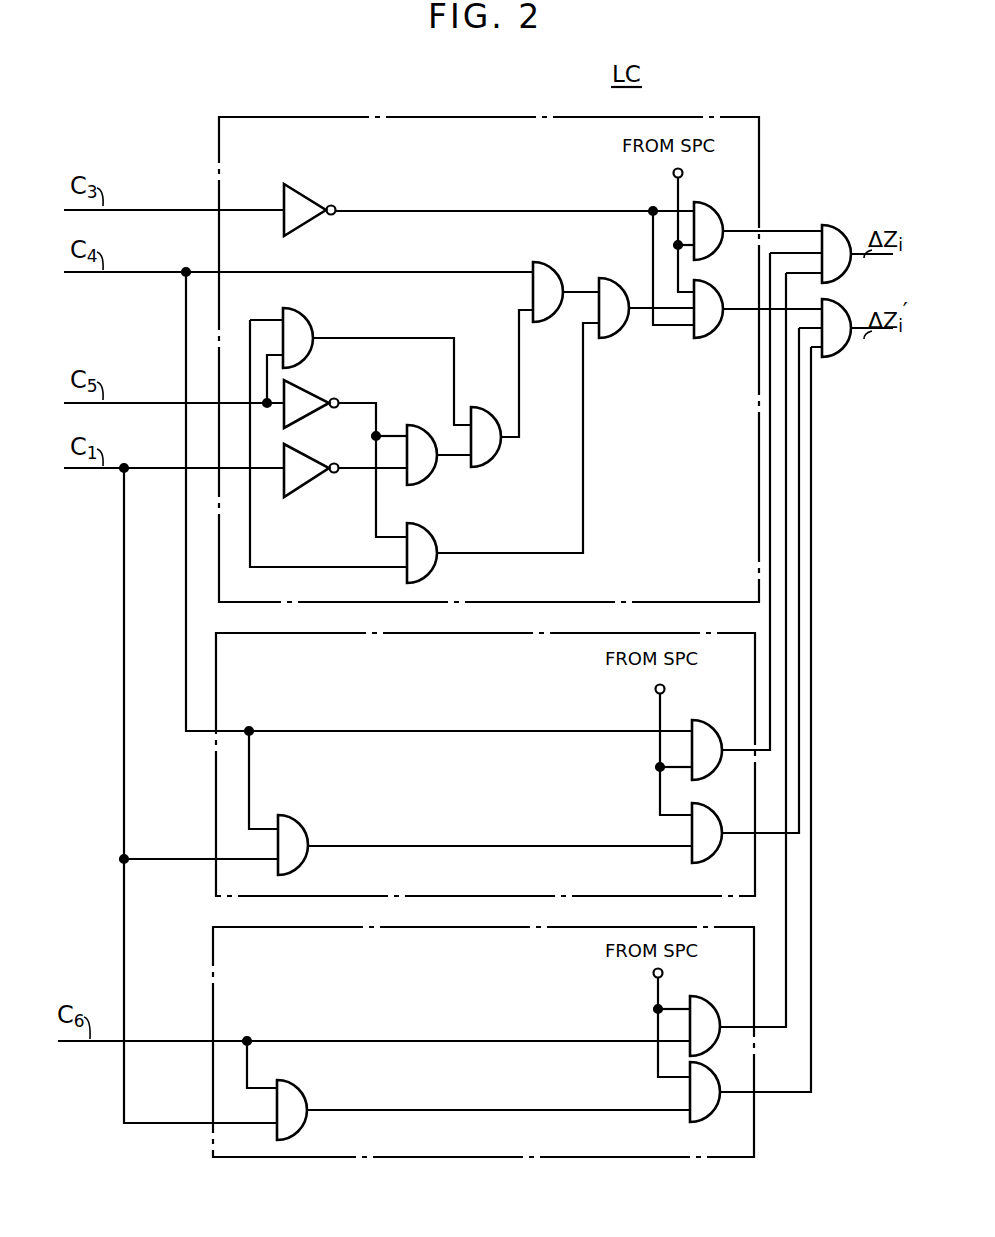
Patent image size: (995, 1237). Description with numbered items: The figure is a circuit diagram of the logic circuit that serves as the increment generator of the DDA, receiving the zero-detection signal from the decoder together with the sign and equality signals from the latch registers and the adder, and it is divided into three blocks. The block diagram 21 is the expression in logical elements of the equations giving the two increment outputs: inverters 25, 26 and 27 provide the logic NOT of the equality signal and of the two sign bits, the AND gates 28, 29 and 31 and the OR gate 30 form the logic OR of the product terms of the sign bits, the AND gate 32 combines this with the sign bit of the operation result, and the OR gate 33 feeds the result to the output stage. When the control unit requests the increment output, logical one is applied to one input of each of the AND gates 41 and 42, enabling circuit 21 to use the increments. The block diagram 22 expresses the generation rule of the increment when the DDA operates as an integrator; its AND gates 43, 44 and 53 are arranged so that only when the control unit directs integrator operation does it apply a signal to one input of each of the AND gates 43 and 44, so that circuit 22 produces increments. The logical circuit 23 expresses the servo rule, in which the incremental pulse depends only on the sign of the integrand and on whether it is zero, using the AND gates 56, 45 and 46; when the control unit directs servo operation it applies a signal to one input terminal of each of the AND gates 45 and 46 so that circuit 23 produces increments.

The block diagram 21 is at (514, 165).
The block diagram 22 is at (528, 675).
The logical circuit 23 is at (526, 980).
The inverter 25 is at (310, 199).
The inverter 26 is at (317, 396).
The inverter 27 is at (312, 488).
The AND gate 28 is at (311, 318).
The AND gate 29 is at (431, 473).
The OR gate 30 is at (500, 451).
The AND gate 31 is at (434, 564).
The AND gate 32 is at (559, 280).
The OR gate 33 is at (621, 297).
The AND gate 41 is at (717, 219).
The AND gate 42 is at (717, 292).
The AND gate 43 is at (710, 730).
The AND gate 44 is at (710, 813).
The AND gate 45 is at (706, 1008).
The AND gate 46 is at (709, 1107).
The AND gate 53 is at (306, 832).
The AND gate 56 is at (301, 1096).